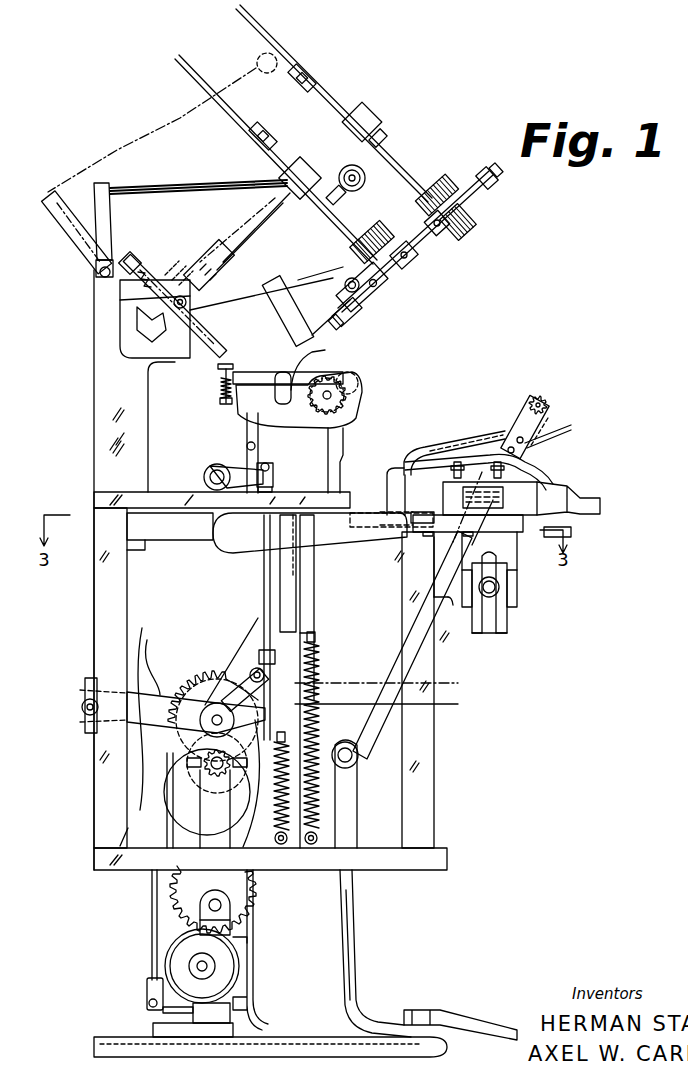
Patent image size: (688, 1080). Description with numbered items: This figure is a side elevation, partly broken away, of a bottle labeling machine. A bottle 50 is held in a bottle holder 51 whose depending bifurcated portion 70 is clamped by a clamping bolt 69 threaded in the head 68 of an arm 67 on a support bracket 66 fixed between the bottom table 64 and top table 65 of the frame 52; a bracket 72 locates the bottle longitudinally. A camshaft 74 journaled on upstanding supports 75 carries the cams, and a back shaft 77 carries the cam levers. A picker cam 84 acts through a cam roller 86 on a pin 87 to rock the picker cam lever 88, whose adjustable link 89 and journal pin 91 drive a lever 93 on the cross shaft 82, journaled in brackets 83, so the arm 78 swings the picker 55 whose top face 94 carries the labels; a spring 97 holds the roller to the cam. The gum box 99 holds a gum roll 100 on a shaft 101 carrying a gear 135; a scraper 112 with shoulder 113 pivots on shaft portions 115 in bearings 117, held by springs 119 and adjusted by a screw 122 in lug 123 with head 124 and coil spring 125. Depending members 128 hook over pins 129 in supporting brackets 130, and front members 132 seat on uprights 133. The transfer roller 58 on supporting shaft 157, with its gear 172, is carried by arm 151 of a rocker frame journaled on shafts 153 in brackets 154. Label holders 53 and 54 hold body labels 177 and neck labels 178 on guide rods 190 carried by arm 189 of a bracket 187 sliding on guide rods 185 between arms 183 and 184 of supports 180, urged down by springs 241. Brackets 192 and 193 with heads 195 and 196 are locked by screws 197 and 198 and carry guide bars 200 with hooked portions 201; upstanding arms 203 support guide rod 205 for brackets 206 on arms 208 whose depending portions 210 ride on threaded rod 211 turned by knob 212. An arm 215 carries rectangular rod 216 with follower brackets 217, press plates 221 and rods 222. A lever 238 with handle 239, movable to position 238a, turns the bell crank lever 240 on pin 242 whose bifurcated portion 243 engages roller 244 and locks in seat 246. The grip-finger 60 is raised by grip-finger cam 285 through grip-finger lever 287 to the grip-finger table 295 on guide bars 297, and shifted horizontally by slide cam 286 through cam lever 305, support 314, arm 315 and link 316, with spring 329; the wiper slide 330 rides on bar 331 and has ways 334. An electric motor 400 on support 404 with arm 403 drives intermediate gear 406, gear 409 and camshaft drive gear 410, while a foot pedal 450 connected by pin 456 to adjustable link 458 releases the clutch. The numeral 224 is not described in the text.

The bottle 50 is at (600, 505).
The bottle holder 51 is at (526, 537).
The frame 52 is at (100, 640).
The label holder 53 is at (394, 228).
The label holder 54 is at (446, 185).
The picker 55 is at (571, 434).
The transfer roller 58 is at (554, 424).
The grip-finger 60 is at (544, 468).
The bottom table 64 is at (447, 857).
The top table 65 is at (105, 500).
The support bracket 66 is at (430, 788).
The arm 67 is at (452, 600).
The head 68 is at (508, 593).
The clamping bolt 69 is at (496, 583).
The bifurcated portion 70 is at (500, 628).
The bracket 72 is at (441, 512).
The camshaft 74 is at (217, 773).
The upstanding support 75 is at (215, 809).
The back shaft 77 is at (84, 707).
The arm 78 is at (310, 533).
The cross shaft 82 is at (222, 466).
The bracket 83 is at (205, 486).
The picker cam 84 is at (188, 783).
The cam roller 86 is at (191, 669).
The pin 87 is at (212, 720).
The picker cam lever 88 is at (196, 712).
The adjustable link 89 is at (266, 582).
The journal pin 91 is at (273, 477).
The lever 93 is at (243, 469).
The top face 94 is at (490, 440).
The spring 97 is at (244, 844).
The gum box 99 is at (290, 409).
The gum roll 100 is at (346, 392).
The shaft 101 is at (350, 398).
The scraper 112 is at (290, 367).
The shoulder 113 is at (344, 445).
The shaft portion 115 is at (273, 371).
The bearing 117 is at (278, 394).
The spring 119 is at (263, 377).
The screw 122 is at (245, 420).
The lug 123 is at (221, 401).
The head 124 is at (220, 368).
The coil spring 125 is at (220, 390).
The depending member 128 is at (247, 446).
The pin 129 is at (260, 445).
The supporting bracket 130 is at (260, 455).
The depending member 132 is at (352, 437).
The upright 133 is at (350, 460).
The gear 135 is at (345, 386).
The arm 151 is at (414, 641).
The shaft 153 is at (356, 760).
The bracket 154 is at (350, 801).
The supporting shaft 157 is at (545, 408).
The gear 172 is at (534, 404).
The body labels 177 is at (420, 305).
The neck labels 178 is at (470, 223).
The support 180 is at (120, 436).
The arm 183 is at (148, 396).
The arm 184 is at (137, 258).
The guide rod 185 is at (194, 310).
The bracket 187 is at (198, 340).
The arm 189 is at (205, 320).
The guide rod 190 is at (478, 192).
The bracket 192 is at (400, 322).
The bracket 193 is at (420, 256).
The head 195 is at (372, 326).
The head 196 is at (420, 262).
The screw 197 is at (410, 315).
The screw 198 is at (405, 278).
The guide bar 200 is at (360, 243).
The hooked portion 201 is at (424, 273).
The upstanding arm 203 is at (343, 288).
The guide rod 205 is at (350, 285).
The bracket 206 is at (386, 297).
The arm 208 is at (347, 275).
The depending portion 210 is at (352, 290).
The threaded rod 211 is at (340, 292).
The knob 212 is at (332, 305).
The arm 215 is at (203, 260).
The rectangular rod 216 is at (372, 108).
The bracket 217 is at (345, 118).
The press plate 221 is at (345, 270).
The rod 222 is at (252, 24).
The collar 224 is at (263, 128).
The lever 238 is at (240, 180).
The lever position 238a is at (183, 122).
The handle 239 is at (365, 175).
The bell crank lever 240 is at (110, 213).
The spring 241 is at (133, 301).
The pin 242 is at (100, 272).
The bifurcated portion 243 is at (140, 314).
The roller 244 is at (219, 255).
The depressed seat 246 is at (140, 332).
The grip-finger cam 285 is at (243, 847).
The grip-finger slide cam 286 is at (224, 857).
The grip-finger lever 287 is at (166, 661).
The grip-finger table 295 is at (187, 537).
The guide bar 297 is at (290, 601).
The cam lever 305 is at (148, 708).
The support 314 is at (140, 834).
The arm 315 is at (262, 622).
The link 316 is at (270, 567).
The spring 329 is at (348, 877).
The wiper slide 330 is at (441, 681).
The bar 331 is at (441, 703).
The way 334 is at (350, 520).
The electric motor 400 is at (225, 950).
The arm 403 is at (222, 915).
The support 404 is at (200, 1030).
The intermediate gear 406 is at (237, 901).
The gear 409 is at (175, 881).
The camshaft drive gear 410 is at (203, 667).
The foot pedal 450 is at (436, 1011).
The pin 456 is at (149, 1004).
The adjustable link 458 is at (152, 950).